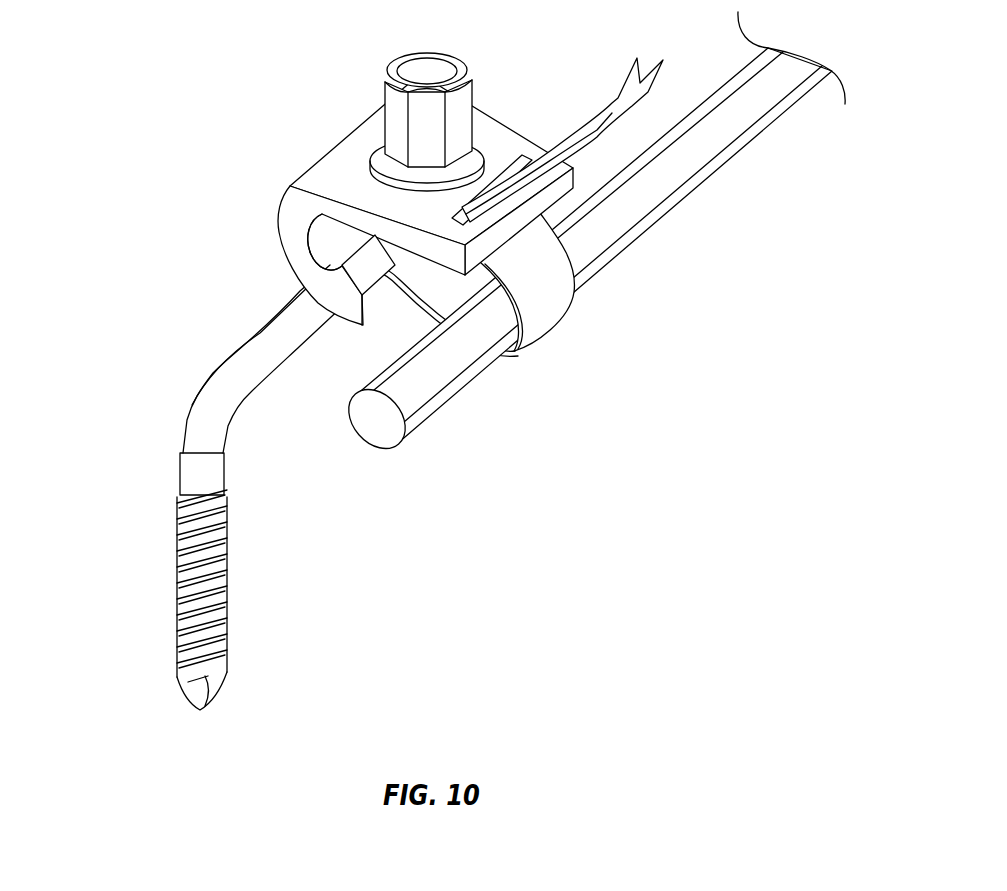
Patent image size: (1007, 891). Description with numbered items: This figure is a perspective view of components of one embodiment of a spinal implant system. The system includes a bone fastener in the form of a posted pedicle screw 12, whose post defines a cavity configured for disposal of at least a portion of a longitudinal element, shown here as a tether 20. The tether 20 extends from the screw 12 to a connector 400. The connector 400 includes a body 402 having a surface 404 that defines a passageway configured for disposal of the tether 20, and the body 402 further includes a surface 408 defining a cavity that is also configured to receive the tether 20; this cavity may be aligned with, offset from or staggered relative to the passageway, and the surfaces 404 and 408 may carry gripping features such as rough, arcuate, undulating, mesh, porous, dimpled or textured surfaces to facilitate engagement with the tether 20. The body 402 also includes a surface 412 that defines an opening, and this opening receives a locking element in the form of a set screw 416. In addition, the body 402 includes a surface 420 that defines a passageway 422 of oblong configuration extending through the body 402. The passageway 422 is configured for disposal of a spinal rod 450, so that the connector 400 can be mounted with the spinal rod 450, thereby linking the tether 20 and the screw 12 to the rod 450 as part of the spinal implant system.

The posted pedicle screw 12 is at (143, 609).
The tether 20 is at (207, 408).
The connector 400 is at (517, 252).
The body 402 is at (355, 308).
The surface 404 is at (433, 309).
The surface 408 is at (591, 252).
The surface 412 is at (507, 138).
The set screw 416 is at (462, 110).
The surface 420 is at (306, 229).
The passageway 422 is at (333, 252).
The spinal rod 450 is at (390, 430).